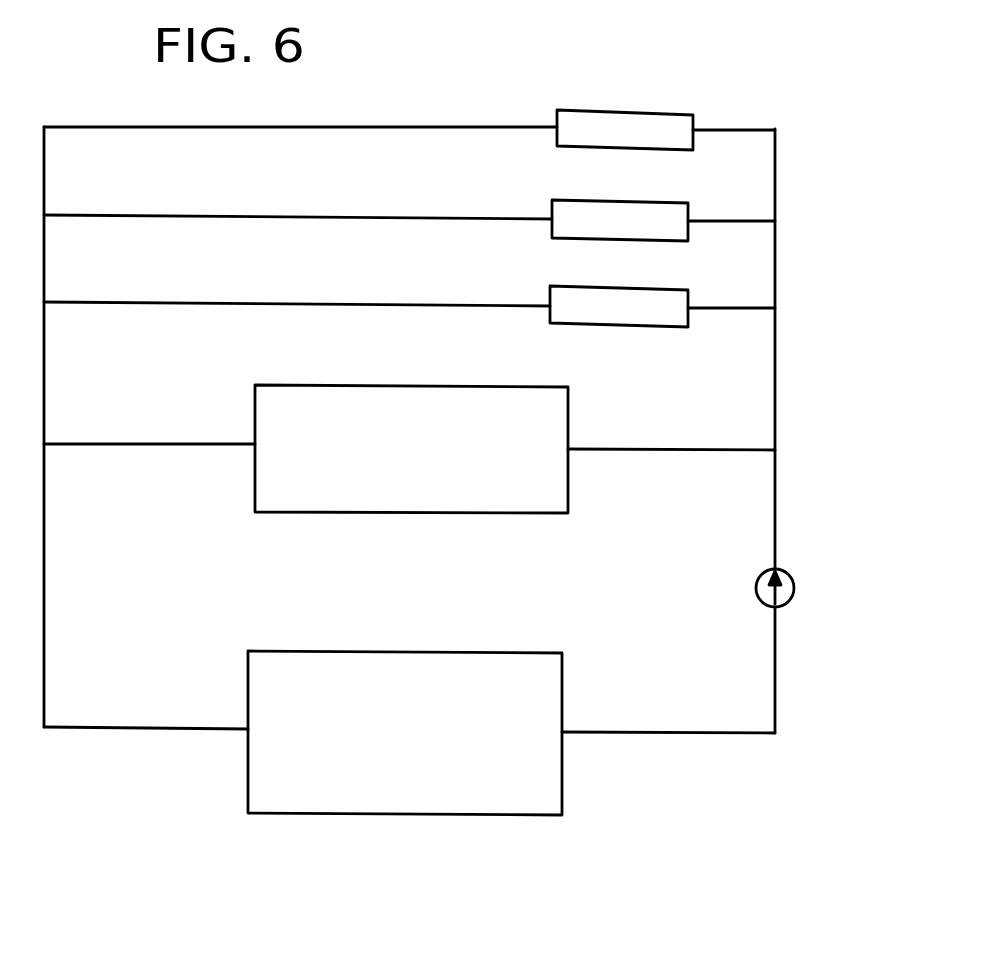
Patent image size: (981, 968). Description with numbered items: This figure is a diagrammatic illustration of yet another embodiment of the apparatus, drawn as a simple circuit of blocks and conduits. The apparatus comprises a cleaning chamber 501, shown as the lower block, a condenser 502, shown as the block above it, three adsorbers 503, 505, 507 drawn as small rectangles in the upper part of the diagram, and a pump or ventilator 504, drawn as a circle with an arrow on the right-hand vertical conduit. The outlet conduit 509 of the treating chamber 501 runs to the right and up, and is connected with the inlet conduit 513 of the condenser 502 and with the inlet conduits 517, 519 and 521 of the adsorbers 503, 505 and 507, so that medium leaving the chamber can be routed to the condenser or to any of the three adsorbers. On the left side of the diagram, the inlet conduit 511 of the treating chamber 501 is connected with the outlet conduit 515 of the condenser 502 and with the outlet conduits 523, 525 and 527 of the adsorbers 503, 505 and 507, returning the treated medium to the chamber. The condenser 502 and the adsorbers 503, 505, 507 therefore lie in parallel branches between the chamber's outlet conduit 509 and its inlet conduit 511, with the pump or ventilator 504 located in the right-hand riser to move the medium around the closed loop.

The cleaning chamber 501 is at (430, 672).
The condenser 502 is at (385, 412).
The adsorber 503 is at (640, 318).
The pump or ventilator 504 is at (756, 590).
The adsorber 505 is at (650, 221).
The adsorber 507 is at (652, 130).
The outlet conduit of the treating chamber 509 is at (640, 733).
The inlet conduit of the treating chamber 511 is at (120, 728).
The inlet conduit of the condenser 513 is at (685, 450).
The outlet conduit of the condenser 515 is at (125, 444).
The inlet conduit of the adsorber 517 is at (748, 308).
The inlet conduit of the adsorber 519 is at (750, 221).
The inlet conduit of the adsorber 521 is at (746, 130).
The outlet conduit of the adsorber 523 is at (210, 302).
The outlet conduit of the adsorber 525 is at (192, 215).
The outlet conduit of the adsorber 527 is at (320, 127).